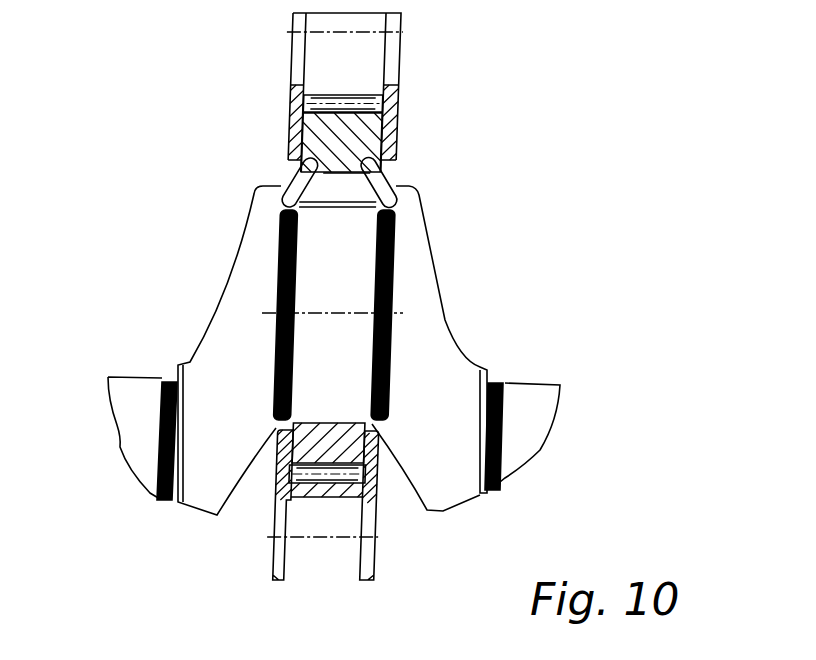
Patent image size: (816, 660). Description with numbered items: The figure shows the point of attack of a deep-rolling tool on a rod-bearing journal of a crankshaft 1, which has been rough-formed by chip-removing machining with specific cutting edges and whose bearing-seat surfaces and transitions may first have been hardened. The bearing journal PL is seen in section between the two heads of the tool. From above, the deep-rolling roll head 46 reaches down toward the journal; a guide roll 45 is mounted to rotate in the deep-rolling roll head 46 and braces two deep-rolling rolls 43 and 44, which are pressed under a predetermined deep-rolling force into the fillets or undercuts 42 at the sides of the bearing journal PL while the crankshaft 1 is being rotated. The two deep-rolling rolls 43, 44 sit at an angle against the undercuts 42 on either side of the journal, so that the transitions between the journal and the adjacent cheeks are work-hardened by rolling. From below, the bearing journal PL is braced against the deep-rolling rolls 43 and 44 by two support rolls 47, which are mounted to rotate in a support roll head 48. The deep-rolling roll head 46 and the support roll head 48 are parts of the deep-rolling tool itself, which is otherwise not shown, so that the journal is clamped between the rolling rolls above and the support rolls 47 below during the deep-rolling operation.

The crankshaft 1 is at (515, 307).
The bearing journal PL is at (277, 337).
The fillets or undercuts 42 is at (275, 250).
The deep-rolling roll 43 is at (393, 178).
The deep-rolling roll 44 is at (290, 185).
The guide roll 45 is at (362, 128).
The deep-rolling roll head 46 is at (389, 60).
The support rolls 47 is at (303, 440).
The support roll head 48 is at (363, 553).